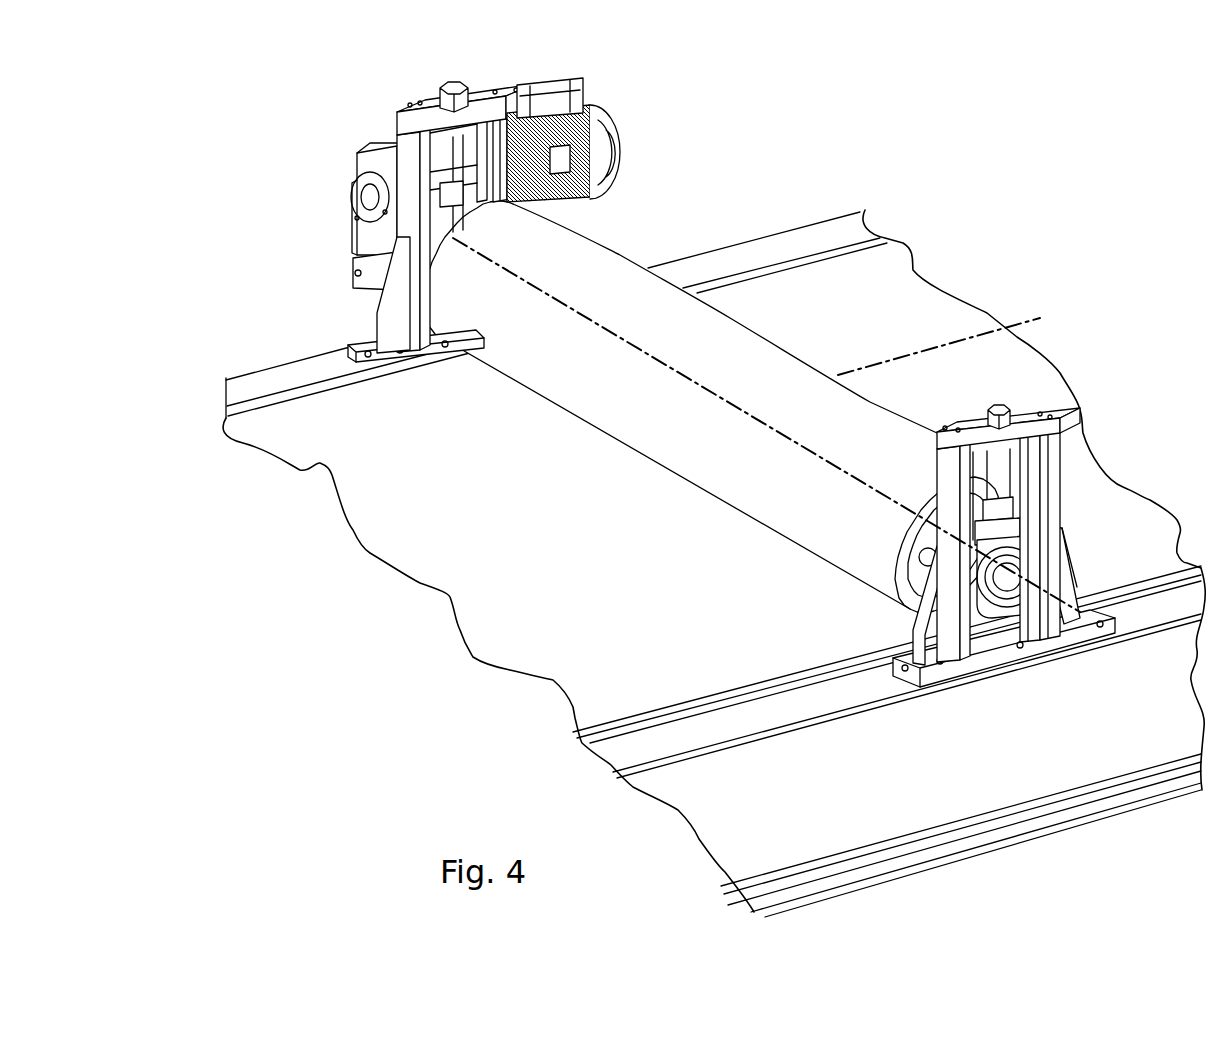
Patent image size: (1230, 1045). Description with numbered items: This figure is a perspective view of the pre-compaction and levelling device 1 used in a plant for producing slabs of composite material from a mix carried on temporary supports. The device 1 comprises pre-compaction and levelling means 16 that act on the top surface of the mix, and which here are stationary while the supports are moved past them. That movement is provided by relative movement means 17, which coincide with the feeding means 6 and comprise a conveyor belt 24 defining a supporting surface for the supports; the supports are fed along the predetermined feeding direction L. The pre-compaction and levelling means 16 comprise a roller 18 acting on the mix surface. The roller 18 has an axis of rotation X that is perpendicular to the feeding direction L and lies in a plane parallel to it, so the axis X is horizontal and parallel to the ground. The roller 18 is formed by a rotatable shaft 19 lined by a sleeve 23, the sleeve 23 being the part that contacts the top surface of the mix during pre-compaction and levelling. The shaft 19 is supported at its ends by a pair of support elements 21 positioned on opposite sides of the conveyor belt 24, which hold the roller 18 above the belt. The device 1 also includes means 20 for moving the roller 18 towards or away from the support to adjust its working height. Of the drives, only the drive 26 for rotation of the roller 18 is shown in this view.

The device 1 is at (925, 160).
The feeding means 6 is at (1097, 408).
The pre-compaction and levelling means 16 is at (641, 216).
The relative movement means 17 is at (483, 585).
The roller 18 is at (712, 414).
The rotatable shaft 19 is at (1005, 588).
The means for moving the roller 20 is at (580, 60).
The support elements 21 is at (400, 314).
The sleeve 23 is at (763, 522).
The conveyor belt 24 is at (903, 313).
The drive for rotation of the roller 26 is at (600, 110).
The feeding direction L is at (1030, 320).
The axis of rotation X is at (700, 392).